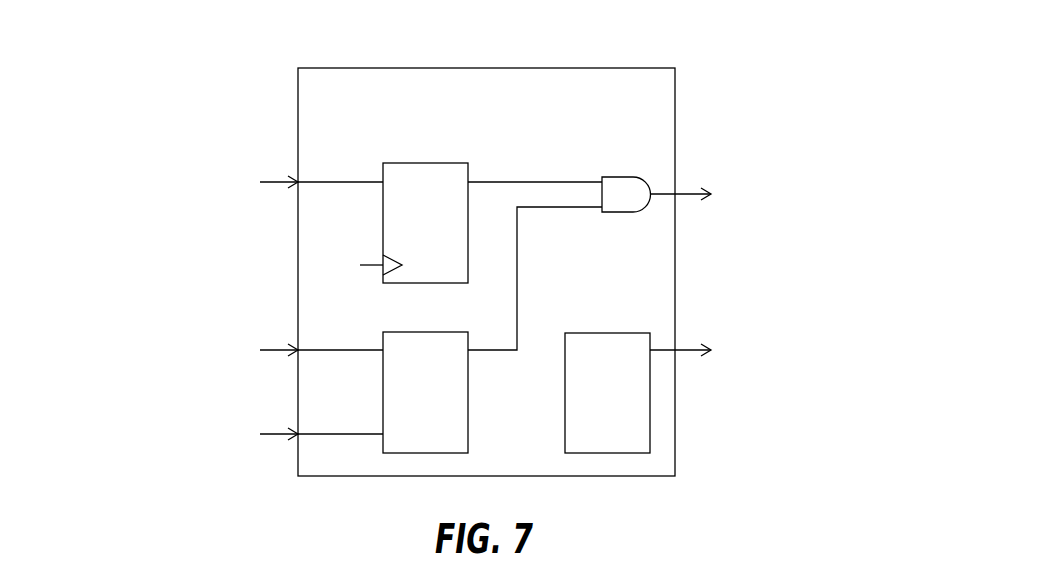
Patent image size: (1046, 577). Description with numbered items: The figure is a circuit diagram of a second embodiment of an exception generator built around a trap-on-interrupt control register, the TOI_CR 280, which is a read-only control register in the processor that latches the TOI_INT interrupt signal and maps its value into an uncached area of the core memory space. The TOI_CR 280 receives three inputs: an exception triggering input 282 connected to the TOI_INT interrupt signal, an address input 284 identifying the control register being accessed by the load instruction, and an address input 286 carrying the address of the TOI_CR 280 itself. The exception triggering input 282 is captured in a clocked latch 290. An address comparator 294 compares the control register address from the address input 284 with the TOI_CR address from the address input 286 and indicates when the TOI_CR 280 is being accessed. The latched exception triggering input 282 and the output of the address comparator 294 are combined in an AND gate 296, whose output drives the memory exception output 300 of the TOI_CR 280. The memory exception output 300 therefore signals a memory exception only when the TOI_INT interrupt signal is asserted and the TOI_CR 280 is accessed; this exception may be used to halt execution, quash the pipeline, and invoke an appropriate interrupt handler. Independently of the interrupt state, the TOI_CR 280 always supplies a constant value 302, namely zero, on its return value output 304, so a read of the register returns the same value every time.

The trap-on-interrupt control register (TOI_CR) 280 is at (602, 68).
The exception triggering input 282 is at (272, 180).
The address input 284 is at (272, 348).
The address input 286 is at (272, 432).
The latch 290 is at (418, 163).
The address comparator 294 is at (468, 423).
The AND gate 296 is at (620, 213).
The memory exception output 300 is at (684, 191).
The constant value 302 is at (582, 333).
The return value output 304 is at (687, 348).